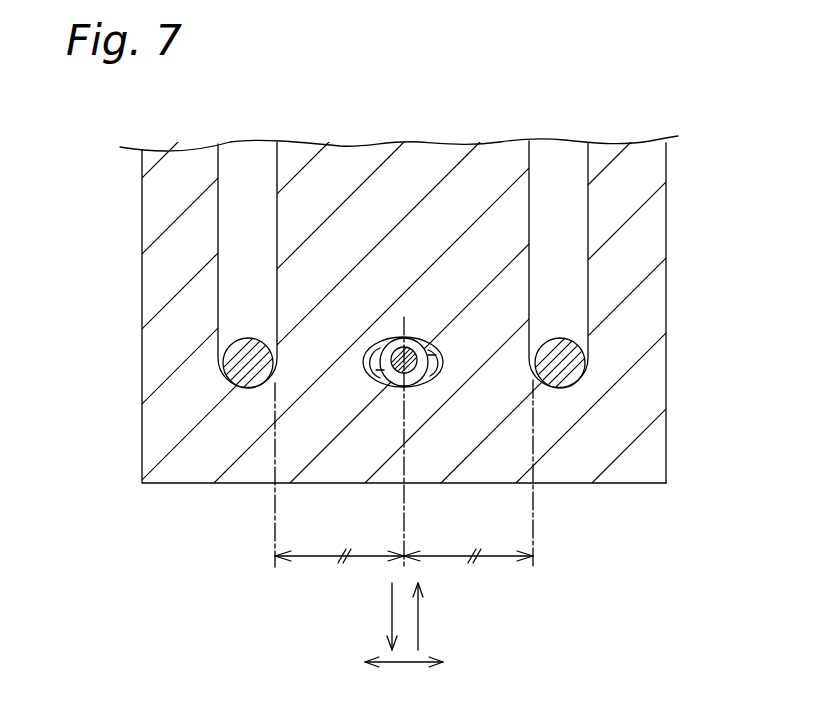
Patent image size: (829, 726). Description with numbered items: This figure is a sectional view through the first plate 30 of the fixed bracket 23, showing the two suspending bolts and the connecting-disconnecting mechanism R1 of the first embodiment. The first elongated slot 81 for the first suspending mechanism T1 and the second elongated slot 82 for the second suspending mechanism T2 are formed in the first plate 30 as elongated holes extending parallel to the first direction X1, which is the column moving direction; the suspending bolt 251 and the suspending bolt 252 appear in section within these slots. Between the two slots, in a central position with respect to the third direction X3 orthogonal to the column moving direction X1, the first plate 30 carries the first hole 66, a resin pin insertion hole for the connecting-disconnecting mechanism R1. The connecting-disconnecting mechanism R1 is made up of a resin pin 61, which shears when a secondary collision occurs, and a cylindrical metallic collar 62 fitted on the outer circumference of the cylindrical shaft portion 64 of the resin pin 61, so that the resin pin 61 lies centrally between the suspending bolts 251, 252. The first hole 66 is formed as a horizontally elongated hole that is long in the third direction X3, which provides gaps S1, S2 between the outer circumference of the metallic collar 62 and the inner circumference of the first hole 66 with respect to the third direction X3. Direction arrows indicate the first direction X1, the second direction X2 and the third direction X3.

The first plate 30 is at (657, 222).
The fixed bracket 23 is at (668, 284).
The first elongated slot 81 is at (247, 152).
The second elongated slot 82 is at (561, 152).
The suspending bolt 251 is at (233, 362).
The suspending bolt 252 is at (567, 360).
The first suspending mechanism T1 is at (219, 367).
The second suspending mechanism T2 is at (590, 368).
The resin pin 61 is at (392, 349).
The cylindrical metallic collar 62 is at (376, 380).
The cylindrical shaft portion 64 is at (392, 385).
The first hole 66 is at (440, 372).
The connecting-disconnecting mechanism R1 is at (417, 393).
The gap S1 is at (358, 345).
The gap S2 is at (447, 343).
The first direction X1 is at (418, 621).
The second direction X2 is at (392, 603).
The third direction X3 is at (405, 664).